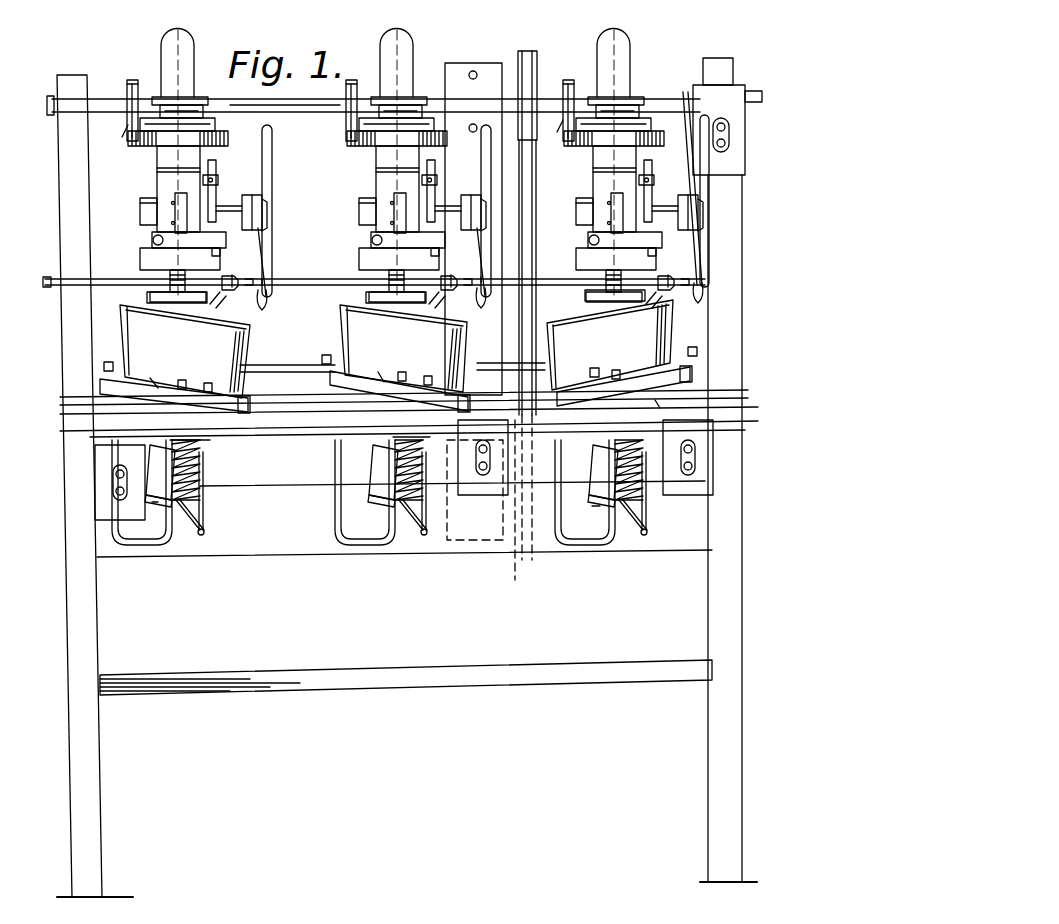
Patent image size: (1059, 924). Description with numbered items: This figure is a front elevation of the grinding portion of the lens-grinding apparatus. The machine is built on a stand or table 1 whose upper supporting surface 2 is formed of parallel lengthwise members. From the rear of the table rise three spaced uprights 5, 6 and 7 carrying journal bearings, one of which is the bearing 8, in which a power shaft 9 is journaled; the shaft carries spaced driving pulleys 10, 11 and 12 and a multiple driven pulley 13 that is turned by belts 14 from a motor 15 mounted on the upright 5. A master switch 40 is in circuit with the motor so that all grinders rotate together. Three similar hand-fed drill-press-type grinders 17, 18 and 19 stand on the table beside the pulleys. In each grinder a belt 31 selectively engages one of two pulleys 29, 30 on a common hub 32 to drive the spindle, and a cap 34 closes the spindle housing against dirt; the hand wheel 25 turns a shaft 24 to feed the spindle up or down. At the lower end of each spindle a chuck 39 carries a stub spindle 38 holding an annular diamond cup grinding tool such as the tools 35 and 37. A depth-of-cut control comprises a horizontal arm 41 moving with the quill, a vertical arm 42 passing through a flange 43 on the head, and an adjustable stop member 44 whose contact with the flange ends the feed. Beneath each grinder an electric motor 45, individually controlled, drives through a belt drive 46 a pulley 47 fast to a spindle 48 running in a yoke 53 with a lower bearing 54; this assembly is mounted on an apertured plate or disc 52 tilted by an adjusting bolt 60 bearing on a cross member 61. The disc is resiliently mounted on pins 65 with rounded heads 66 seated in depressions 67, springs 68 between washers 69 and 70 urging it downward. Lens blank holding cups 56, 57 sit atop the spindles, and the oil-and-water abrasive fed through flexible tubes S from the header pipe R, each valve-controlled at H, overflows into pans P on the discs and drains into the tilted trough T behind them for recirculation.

The stand or table 1 is at (66, 681).
The upper supporting surface 2 is at (64, 425).
The upright 5 is at (60, 151).
The upright 6 is at (447, 66).
The upright 7 is at (724, 68).
The journal bearing 8 is at (47, 102).
The power shaft 9 is at (318, 112).
The driving pulley 10 is at (127, 82).
The driving pulley 11 is at (344, 90).
The driving pulley 12 is at (563, 80).
The multiple driven pulley 13 is at (518, 54).
The belts 14 is at (537, 210).
The motor 15 is at (520, 500).
The grinder 17 is at (157, 183).
The grinder 18 is at (376, 180).
The grinder 19 is at (593, 168).
The shaft 24 is at (232, 206).
The hand wheel 25 is at (272, 165).
The pulley 29 is at (218, 120).
The pulley 30 is at (226, 146).
The belt 31 is at (328, 137).
The common hub 32 is at (196, 96).
The cap 34 is at (192, 50).
The grinding tool 35 is at (152, 292).
The grinding tool 37 is at (585, 294).
The stub spindle 38 is at (372, 268).
The chuck 39 is at (372, 258).
The master switch 40 is at (729, 148).
The horizontal arm 41 is at (156, 242).
The vertical arm 42 is at (216, 167).
The flange or boss 43 is at (226, 232).
The stop member 44 is at (422, 190).
The electric motor 45 is at (162, 545).
The belt drive 46 is at (206, 534).
The pulley 47 is at (338, 454).
The spindle 48 is at (155, 504).
The apertured plate or disc member 52 is at (100, 384).
The yoke 53 is at (150, 458).
The bearing 54 is at (150, 500).
The lens blank holding cup 56 is at (147, 298).
The lens blank holding cup 57 is at (366, 296).
The adjusting bolt 60 is at (399, 349).
The cross member 61 is at (404, 390).
The pintle or pin 65 is at (406, 386).
The rounded head 66 is at (614, 370).
The depression 67 is at (312, 368).
The spring 68 is at (202, 468).
The washer 69 is at (200, 496).
The washer 70 is at (190, 440).
The valve H is at (480, 302).
The pan P is at (122, 320).
The header pipe R is at (44, 280).
The flexible pipes or tubes S is at (449, 297).
The trough T is at (272, 370).